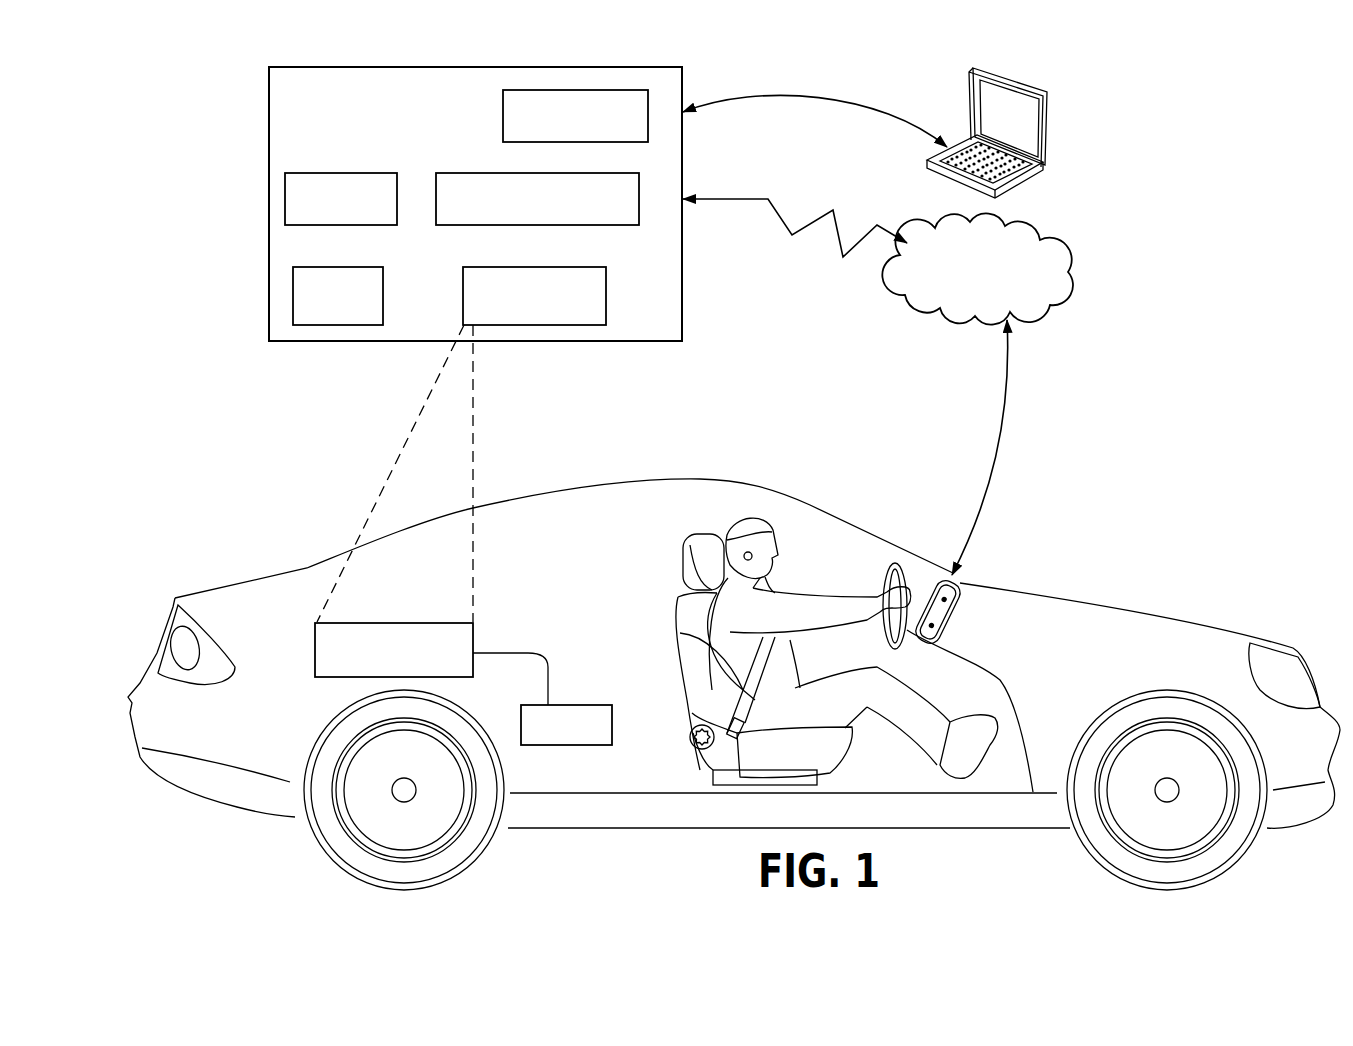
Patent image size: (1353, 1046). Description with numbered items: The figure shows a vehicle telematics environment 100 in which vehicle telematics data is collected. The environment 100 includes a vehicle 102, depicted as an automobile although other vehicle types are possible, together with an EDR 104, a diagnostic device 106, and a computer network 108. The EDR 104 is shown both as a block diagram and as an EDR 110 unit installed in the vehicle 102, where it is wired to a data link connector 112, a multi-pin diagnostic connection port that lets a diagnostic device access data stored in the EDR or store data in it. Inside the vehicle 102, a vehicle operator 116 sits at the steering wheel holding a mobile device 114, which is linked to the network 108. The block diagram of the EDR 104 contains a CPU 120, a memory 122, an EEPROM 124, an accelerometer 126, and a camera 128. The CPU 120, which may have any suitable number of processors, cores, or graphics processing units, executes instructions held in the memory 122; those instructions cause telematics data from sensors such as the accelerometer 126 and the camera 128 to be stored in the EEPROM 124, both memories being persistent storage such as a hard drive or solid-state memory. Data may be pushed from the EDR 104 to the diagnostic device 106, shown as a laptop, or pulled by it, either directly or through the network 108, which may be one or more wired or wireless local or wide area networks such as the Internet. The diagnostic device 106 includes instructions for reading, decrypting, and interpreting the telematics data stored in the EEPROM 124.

The vehicle telematics environment 100 is at (1203, 72).
The vehicle 102 is at (1050, 597).
The EDR 104 is at (269, 102).
The diagnostic device 106 is at (1050, 128).
The computer network 108 is at (1001, 284).
The EDR unit in vehicle 110 is at (473, 637).
The data link connector 112 is at (612, 735).
The mobile device 114 is at (960, 582).
The vehicle operator 116 is at (760, 680).
The CPU 120 is at (334, 266).
The memory 122 is at (495, 266).
The EEPROM 124 is at (348, 172).
The accelerometer 126 is at (470, 172).
The camera 128 is at (556, 90).